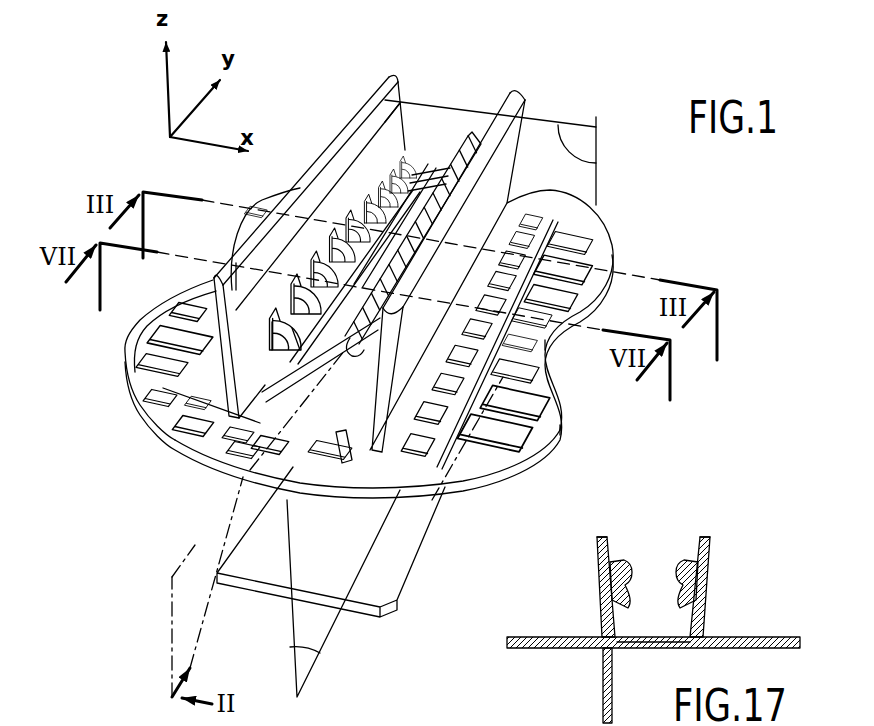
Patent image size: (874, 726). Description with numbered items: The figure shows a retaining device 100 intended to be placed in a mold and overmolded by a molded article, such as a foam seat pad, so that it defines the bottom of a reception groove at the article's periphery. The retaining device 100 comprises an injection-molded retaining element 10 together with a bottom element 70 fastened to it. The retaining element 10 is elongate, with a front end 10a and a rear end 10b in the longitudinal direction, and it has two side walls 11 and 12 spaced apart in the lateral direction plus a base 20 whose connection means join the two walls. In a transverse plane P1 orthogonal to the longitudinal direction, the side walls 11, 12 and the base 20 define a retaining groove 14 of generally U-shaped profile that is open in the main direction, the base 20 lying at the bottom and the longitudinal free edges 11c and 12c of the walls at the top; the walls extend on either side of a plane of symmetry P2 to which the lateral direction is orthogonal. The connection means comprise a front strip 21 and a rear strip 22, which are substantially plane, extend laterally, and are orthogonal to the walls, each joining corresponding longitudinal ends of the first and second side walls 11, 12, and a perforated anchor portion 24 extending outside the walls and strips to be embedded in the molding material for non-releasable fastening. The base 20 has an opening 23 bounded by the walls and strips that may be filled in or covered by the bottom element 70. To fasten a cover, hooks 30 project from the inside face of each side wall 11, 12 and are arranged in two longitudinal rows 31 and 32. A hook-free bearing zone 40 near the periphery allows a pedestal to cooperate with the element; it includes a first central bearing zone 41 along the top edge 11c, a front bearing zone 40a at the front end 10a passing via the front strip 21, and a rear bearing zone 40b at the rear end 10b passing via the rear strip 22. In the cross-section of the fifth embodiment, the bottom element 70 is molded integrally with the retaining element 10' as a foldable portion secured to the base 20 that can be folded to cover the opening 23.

In FIG. 1, the retaining device 100 is at (606, 96).
In FIG. 1, the retaining element 10 is at (349, 85).
In FIG. 17, the retaining element 10' is at (707, 505).
In FIG. 1, the front end 10a is at (190, 465).
In FIG. 1, the rear end 10b is at (537, 106).
In FIG. 1, the first side wall 11 is at (347, 157).
In FIG. 17, the first side wall 11 is at (598, 552).
In FIG. 1, the longitudinal free edge 11c is at (362, 95).
In FIG. 1, the second side wall 12 is at (497, 177).
In FIG. 17, the second side wall 12 is at (710, 550).
In FIG. 1, the longitudinal free edge 12c is at (500, 118).
In FIG. 1, the retaining groove 14 is at (444, 150).
In FIG. 1, the base 20 is at (305, 433).
In FIG. 1, the front strip 21 is at (337, 432).
In FIG. 1, the rear strip 22 is at (413, 203).
In FIG. 1, the opening 23 is at (243, 470).
In FIG. 17, the opening 23 is at (617, 677).
In FIG. 1, the perforated anchor portion 24 is at (510, 450).
In FIG. 17, the perforated anchor portion 24 is at (760, 635).
In FIG. 1, the hooks 30 is at (282, 316).
In FIG. 17, the hooks 30 is at (627, 578).
In FIG. 1, the row 31 is at (290, 295).
In FIG. 1, the row 32 is at (292, 348).
In FIG. 1, the hook-free bearing zone 40 is at (311, 195).
In FIG. 1, the front bearing zone 40a is at (248, 377).
In FIG. 1, the rear bearing zone 40b is at (402, 120).
In FIG. 1, the first central bearing zone 41 is at (298, 212).
In FIG. 1, the bottom element 70 is at (282, 575).
In FIG. 17, the bottom element 70 is at (603, 687).
In FIG. 1, the transverse plane P1 is at (577, 161).
In FIG. 1, the plane of symmetry P2 is at (300, 660).